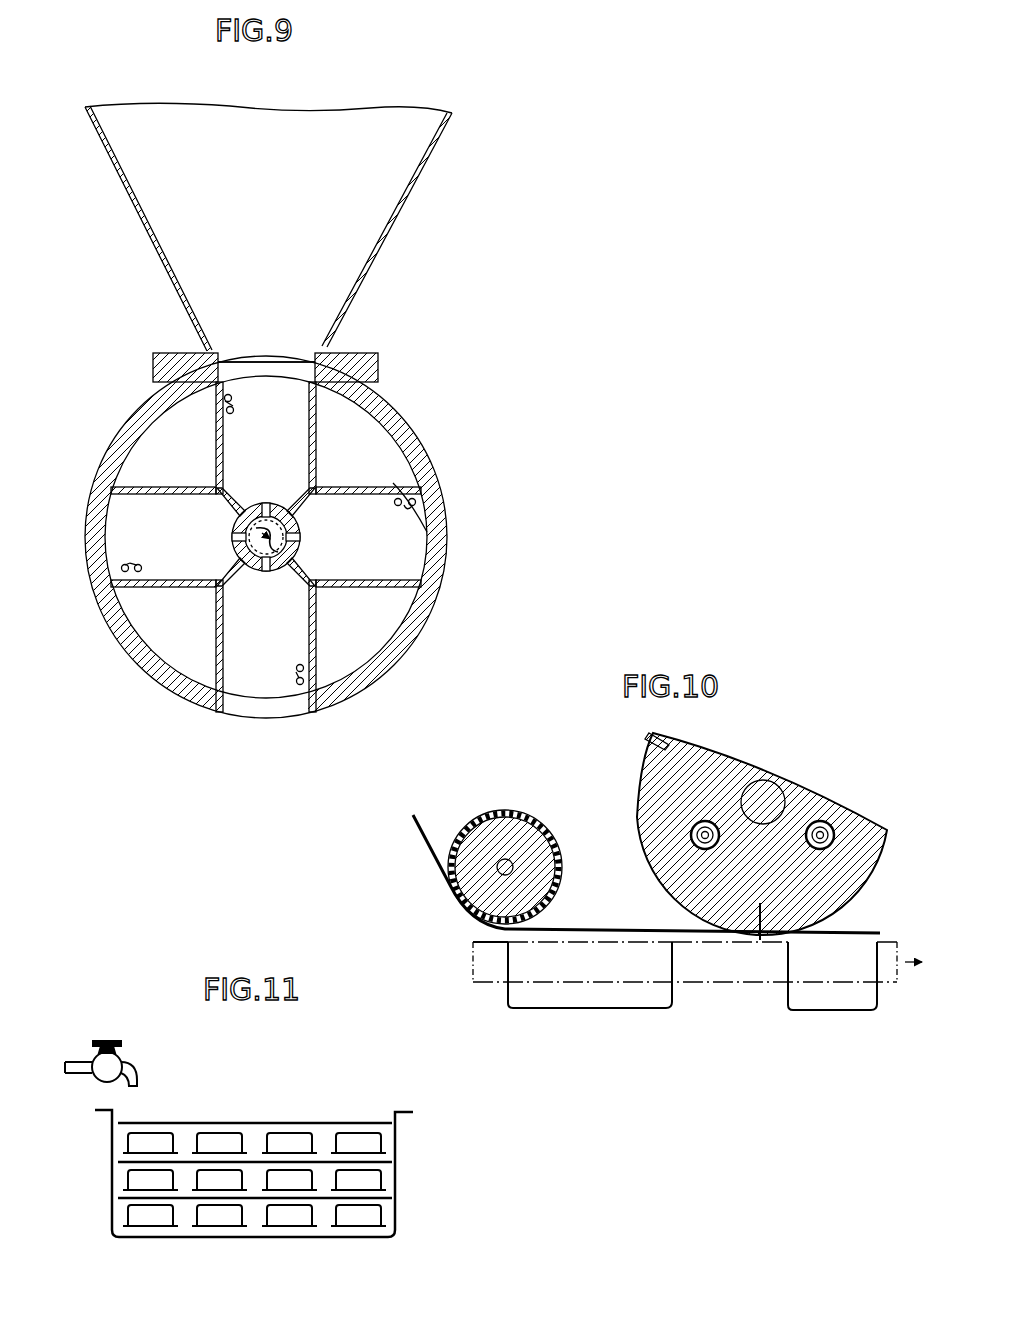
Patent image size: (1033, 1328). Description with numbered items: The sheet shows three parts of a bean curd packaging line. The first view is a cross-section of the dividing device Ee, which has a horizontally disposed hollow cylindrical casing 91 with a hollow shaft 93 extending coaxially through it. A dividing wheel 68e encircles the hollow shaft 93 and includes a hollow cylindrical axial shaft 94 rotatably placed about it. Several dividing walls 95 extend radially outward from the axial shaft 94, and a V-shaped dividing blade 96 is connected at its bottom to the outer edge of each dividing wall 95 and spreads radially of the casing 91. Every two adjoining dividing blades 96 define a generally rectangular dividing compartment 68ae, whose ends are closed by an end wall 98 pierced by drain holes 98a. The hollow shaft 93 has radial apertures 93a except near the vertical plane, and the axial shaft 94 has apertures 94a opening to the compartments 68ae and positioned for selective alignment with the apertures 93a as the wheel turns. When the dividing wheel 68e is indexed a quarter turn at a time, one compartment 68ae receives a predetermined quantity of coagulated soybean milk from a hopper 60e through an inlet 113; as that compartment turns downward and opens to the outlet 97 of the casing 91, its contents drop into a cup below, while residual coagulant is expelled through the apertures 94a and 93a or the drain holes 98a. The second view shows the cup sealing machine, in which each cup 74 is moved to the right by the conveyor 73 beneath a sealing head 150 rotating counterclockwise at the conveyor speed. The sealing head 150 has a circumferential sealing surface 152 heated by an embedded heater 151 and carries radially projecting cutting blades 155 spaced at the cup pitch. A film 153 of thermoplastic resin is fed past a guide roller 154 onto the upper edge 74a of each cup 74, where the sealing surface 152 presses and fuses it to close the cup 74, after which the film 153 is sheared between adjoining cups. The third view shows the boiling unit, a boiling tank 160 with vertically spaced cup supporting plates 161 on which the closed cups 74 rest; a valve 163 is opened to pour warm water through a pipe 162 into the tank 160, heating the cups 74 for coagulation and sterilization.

In FIG. 9, the device Ee is at (177, 97).
In FIG. 9, the hopper 60e is at (413, 187).
In FIG. 9, the inlet 113 is at (278, 350).
In FIG. 9, the end wall 98 is at (303, 421).
In FIG. 9, the drain holes 98a is at (240, 404).
In FIG. 9, the hollow cylindrical casing 91 is at (393, 432).
In FIG. 9, the apertures 94a is at (300, 483).
In FIG. 9, the dividing blade 96 is at (435, 468).
In FIG. 9, the dividing compartment 68ae is at (398, 547).
In FIG. 9, the dividing wheel 68e is at (443, 583).
In FIG. 9, the hollow shaft 93 is at (248, 547).
In FIG. 9, the apertures 93a is at (258, 570).
In FIG. 9, the axial shaft 94 is at (300, 546).
In FIG. 9, the dividing wall 95 is at (318, 590).
In FIG. 9, the outlet 97 is at (262, 708).
In FIG. 10, the sealing head 150 is at (848, 888).
In FIG. 10, the heater 151 is at (832, 826).
In FIG. 10, the sealing surface 152 is at (638, 805).
In FIG. 10, the film 153 is at (427, 851).
In FIG. 10, the guide roller 154 is at (560, 854).
In FIG. 10, the cutting blades 155 is at (652, 736).
In FIG. 10, the conveyor 73 is at (488, 975).
In FIG. 10, the cup 74 is at (672, 1002).
In FIG. 11, the cup 74 is at (132, 1177).
In FIG. 10, the upper edge 74a is at (496, 934).
In FIG. 11, the boiling tank 160 is at (110, 1150).
In FIG. 11, the cup supporting plates 161 is at (392, 1125).
In FIG. 11, the pipe 162 is at (140, 1080).
In FIG. 11, the valve 163 is at (114, 1058).